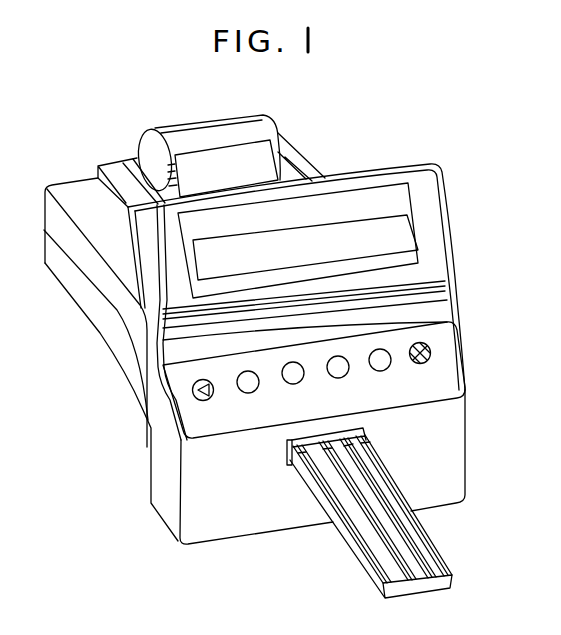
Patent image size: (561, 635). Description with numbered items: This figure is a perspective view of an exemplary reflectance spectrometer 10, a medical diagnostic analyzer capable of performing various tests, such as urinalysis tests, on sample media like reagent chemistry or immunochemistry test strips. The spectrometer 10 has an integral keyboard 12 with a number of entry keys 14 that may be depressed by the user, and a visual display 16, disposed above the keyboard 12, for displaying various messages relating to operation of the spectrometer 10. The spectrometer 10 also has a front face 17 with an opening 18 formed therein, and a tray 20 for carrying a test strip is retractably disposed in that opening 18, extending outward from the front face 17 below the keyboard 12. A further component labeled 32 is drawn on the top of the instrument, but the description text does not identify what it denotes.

The spectrometer 10 is at (457, 182).
The integral keyboard 12 is at (432, 347).
The entry keys 14 is at (287, 379).
The visual display 16 is at (411, 243).
The front face 17 is at (445, 432).
The opening 18 is at (287, 462).
The tray 20 is at (447, 586).
The roll 32 is at (260, 165).